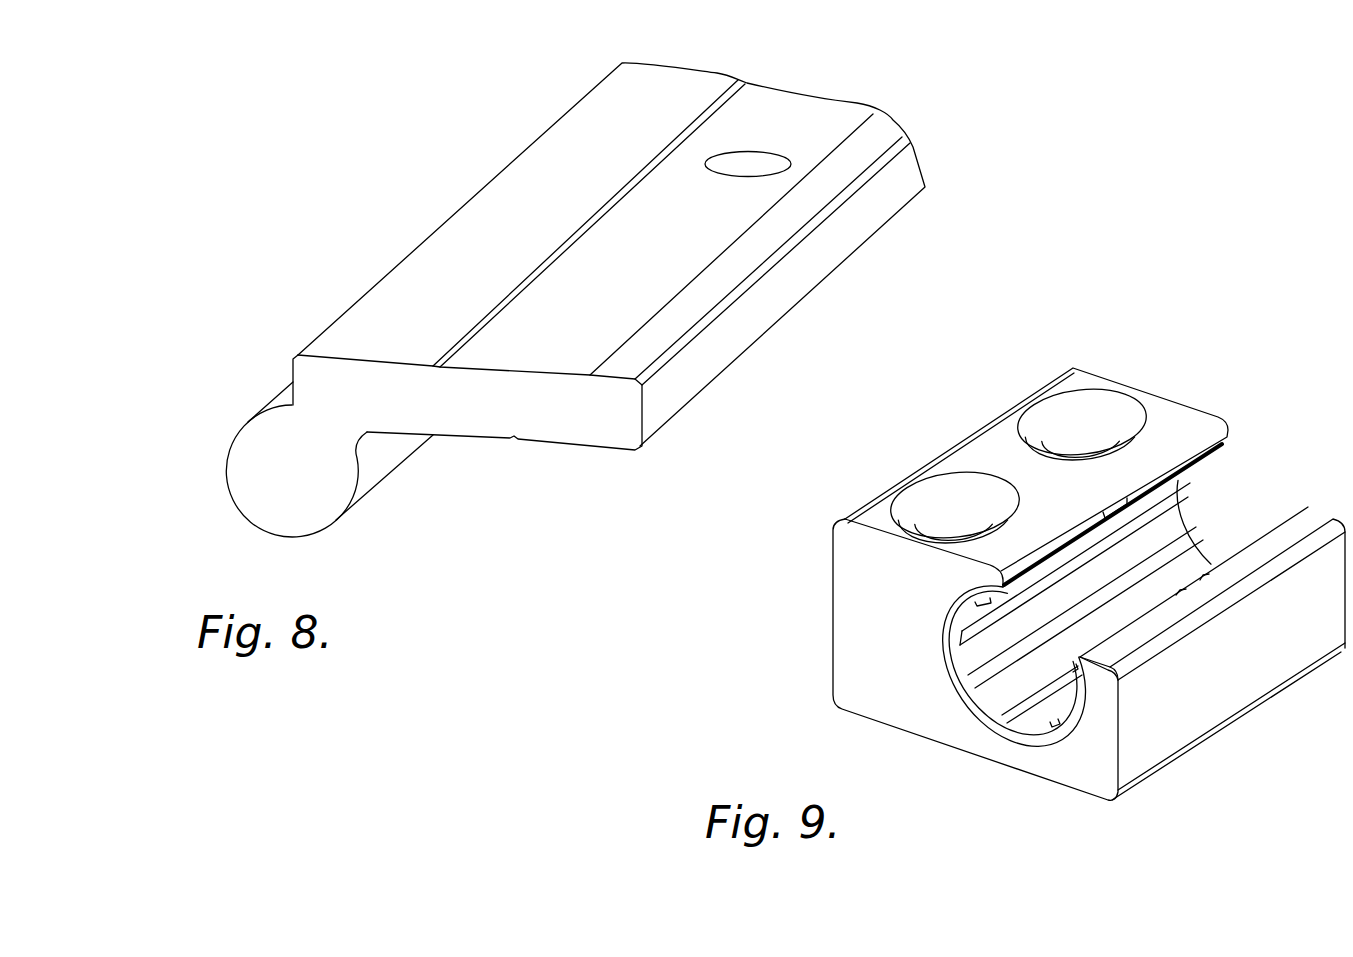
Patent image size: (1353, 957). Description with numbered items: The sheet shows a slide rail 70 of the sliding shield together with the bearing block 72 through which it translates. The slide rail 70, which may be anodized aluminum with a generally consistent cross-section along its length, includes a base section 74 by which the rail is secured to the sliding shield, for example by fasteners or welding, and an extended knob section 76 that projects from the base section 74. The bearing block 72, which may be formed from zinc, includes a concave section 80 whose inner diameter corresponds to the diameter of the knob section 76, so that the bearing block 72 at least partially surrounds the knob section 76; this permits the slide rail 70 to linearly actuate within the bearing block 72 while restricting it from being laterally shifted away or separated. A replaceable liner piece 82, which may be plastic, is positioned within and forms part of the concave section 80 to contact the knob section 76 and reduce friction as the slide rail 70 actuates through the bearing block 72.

In FIG. 8, the slide rail 70 is at (383, 195).
In FIG. 9, the bearing block 72 is at (993, 457).
In FIG. 8, the base section 74 is at (562, 416).
In FIG. 8, the knob section 76 is at (272, 475).
In FIG. 9, the concave section 80 is at (1237, 494).
In FIG. 9, the liner piece 82 is at (1012, 693).